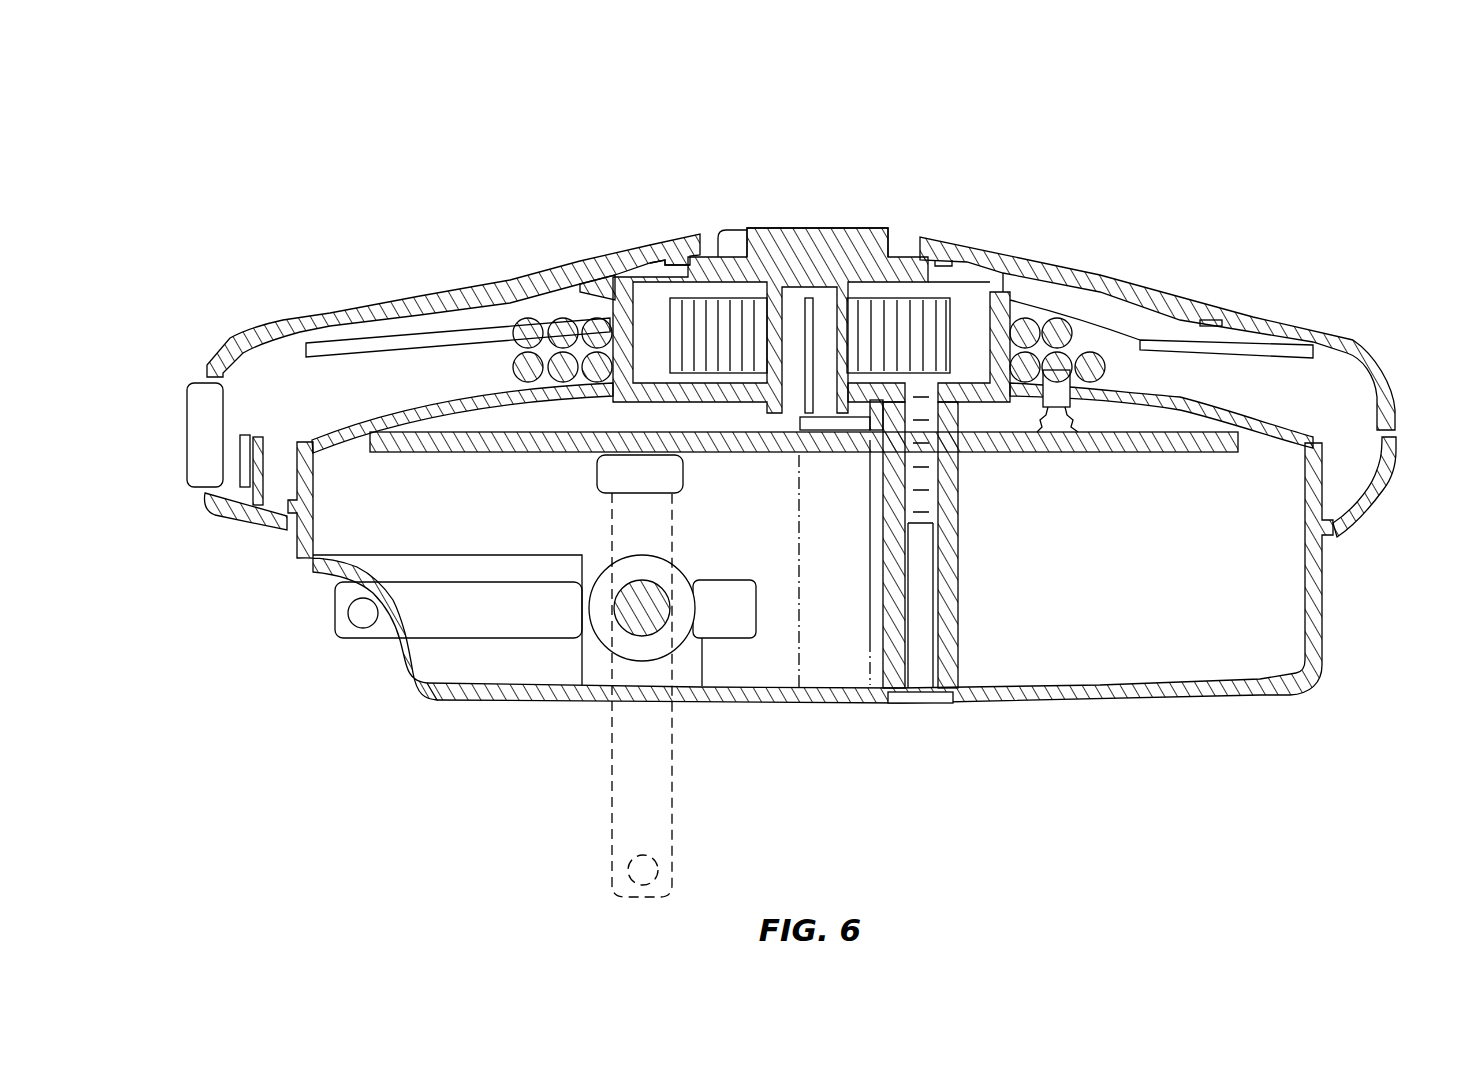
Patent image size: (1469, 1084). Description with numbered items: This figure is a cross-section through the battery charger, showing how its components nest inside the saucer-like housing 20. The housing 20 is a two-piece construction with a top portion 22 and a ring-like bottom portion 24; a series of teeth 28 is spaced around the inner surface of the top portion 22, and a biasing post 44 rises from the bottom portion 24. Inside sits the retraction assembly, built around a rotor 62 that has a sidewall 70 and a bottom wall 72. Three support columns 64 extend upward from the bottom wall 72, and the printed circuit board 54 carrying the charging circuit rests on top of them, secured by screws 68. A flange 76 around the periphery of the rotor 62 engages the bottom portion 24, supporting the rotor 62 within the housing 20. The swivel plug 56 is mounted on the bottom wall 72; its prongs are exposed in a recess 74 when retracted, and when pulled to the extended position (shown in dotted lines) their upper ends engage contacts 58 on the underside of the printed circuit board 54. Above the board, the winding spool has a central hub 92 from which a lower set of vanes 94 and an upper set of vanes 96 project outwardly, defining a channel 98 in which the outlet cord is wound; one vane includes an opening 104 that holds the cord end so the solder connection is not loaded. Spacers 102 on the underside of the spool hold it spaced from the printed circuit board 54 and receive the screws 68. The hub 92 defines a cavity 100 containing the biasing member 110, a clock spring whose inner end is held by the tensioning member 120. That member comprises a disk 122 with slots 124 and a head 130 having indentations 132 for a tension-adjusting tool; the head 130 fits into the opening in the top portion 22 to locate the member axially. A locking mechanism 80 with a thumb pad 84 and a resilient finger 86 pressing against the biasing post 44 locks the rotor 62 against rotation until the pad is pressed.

The housing 20 is at (1400, 331).
The top portion 22 is at (1253, 318).
The bottom portion 24 is at (1370, 513).
The teeth 28 is at (950, 237).
The biasing post 44 is at (263, 437).
The printed circuit board 54 is at (1183, 452).
The swivel plug 56 is at (345, 630).
The contacts 58 is at (600, 463).
The rotor 62 is at (1323, 648).
The support columns 64 is at (812, 537).
The screws 68 is at (925, 560).
The sidewall 70 is at (1317, 603).
The bottom wall 72 is at (777, 705).
The recess 74 is at (376, 676).
The flange 76 is at (287, 512).
The locking mechanism 80 is at (168, 396).
The thumb pad 84 is at (198, 433).
The resilient finger 86 is at (243, 433).
The central hub 92 is at (1010, 308).
The lower set of vanes 94 is at (378, 420).
The upper set of vanes 96 is at (1122, 318).
The channel 98 is at (1290, 387).
The cavity 100 is at (655, 322).
The spacers 102 is at (797, 460).
The opening 104 is at (1067, 393).
The biasing member 110 is at (682, 322).
The tensioning member 120 is at (883, 192).
The disk 122 is at (1003, 273).
The slots 124 is at (668, 272).
The head 130 is at (795, 228).
The indentations 132 is at (724, 230).